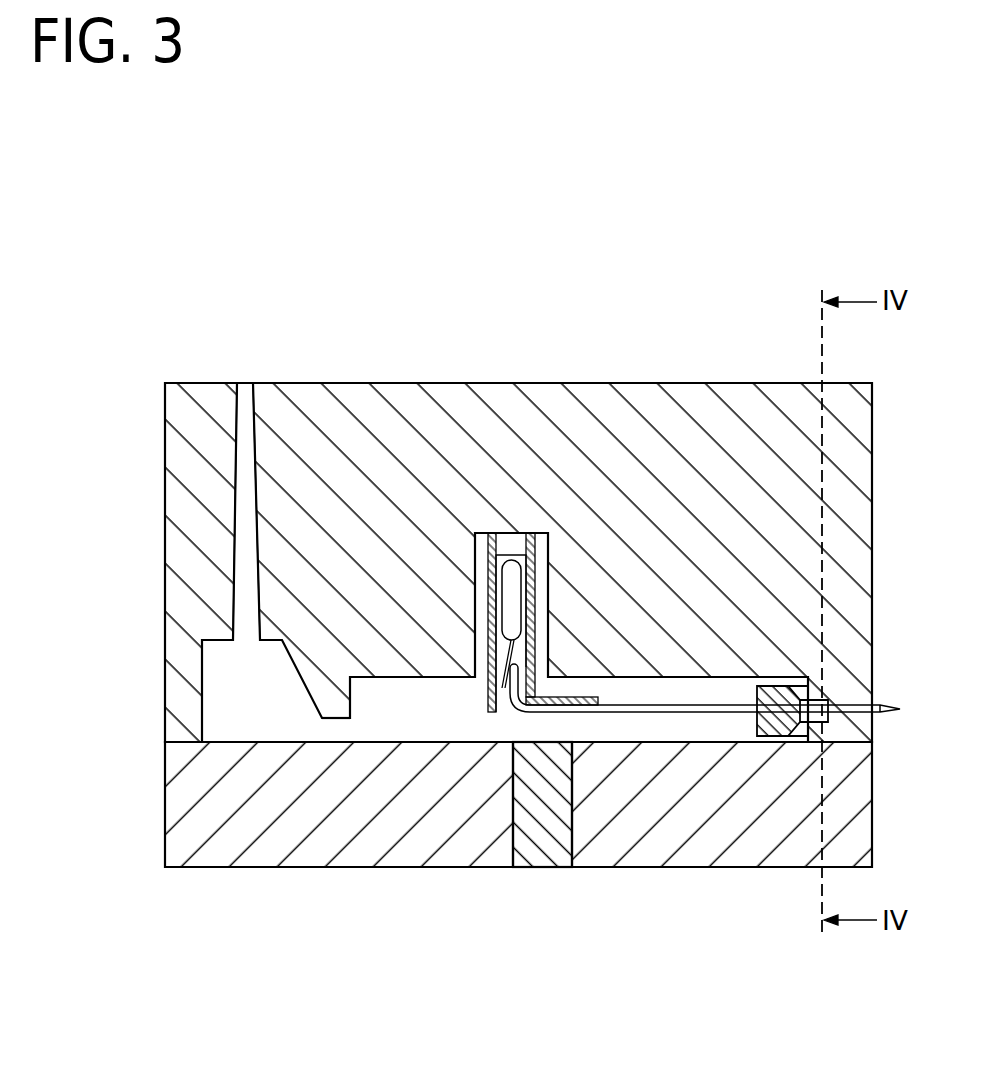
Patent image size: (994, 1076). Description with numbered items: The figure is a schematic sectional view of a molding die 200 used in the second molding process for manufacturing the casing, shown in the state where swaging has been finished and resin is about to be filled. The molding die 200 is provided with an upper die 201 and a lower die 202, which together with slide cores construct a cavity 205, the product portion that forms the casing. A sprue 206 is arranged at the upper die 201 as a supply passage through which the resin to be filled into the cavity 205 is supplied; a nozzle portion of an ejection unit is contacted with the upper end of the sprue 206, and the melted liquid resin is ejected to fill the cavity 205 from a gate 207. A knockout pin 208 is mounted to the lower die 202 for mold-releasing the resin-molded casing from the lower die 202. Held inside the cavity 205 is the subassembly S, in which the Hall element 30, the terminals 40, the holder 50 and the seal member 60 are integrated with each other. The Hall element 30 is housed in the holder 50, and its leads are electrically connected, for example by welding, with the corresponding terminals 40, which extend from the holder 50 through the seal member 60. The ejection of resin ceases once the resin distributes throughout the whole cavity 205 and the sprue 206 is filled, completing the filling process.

The molding die 200 is at (114, 204).
The upper die 201 is at (211, 383).
The lower die 202 is at (216, 867).
The cavity 205 is at (678, 728).
The sprue 206 is at (240, 460).
The gate 207 is at (335, 742).
The knockout pin 208 is at (543, 867).
The holder 50 is at (480, 552).
The Hall element 30 is at (509, 555).
The terminals 40 is at (618, 704).
The subassembly S is at (680, 705).
The seal member 60 is at (760, 690).